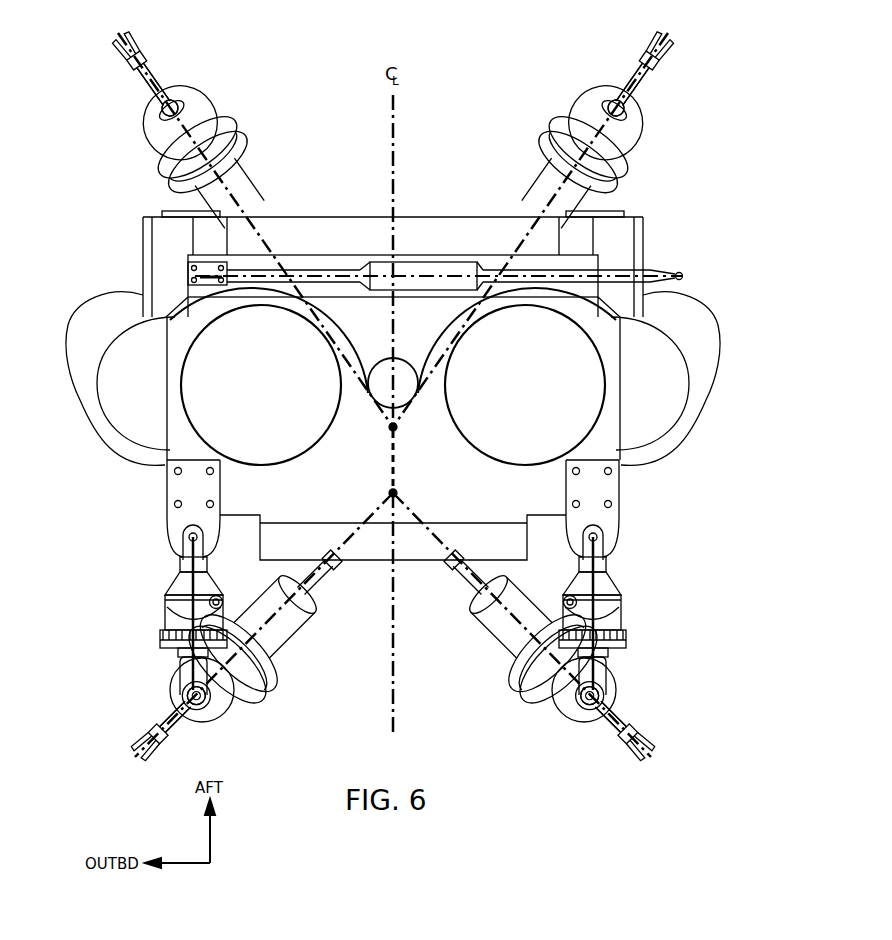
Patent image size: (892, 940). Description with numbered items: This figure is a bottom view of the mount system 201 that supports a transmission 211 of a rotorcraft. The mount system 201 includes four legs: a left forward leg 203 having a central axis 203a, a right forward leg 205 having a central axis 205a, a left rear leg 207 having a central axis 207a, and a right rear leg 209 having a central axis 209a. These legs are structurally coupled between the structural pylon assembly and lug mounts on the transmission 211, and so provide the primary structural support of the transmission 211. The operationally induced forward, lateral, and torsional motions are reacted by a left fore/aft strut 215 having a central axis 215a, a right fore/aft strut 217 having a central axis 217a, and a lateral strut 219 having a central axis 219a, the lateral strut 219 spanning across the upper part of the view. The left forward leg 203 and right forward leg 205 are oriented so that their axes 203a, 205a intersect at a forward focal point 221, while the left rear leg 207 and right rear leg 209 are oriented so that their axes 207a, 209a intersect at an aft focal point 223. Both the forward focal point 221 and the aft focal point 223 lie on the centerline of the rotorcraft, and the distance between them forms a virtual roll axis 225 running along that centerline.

The mount system 201 is at (470, 72).
The left forward leg 203 is at (257, 697).
The central axis of the left forward leg 203a is at (187, 713).
The right forward leg 205 is at (530, 698).
The central axis of the right forward leg 205a is at (603, 713).
The left rear leg 207 is at (143, 130).
The central axis of the left rear leg 207a is at (165, 92).
The right rear leg 209 is at (644, 130).
The central axis of the right rear leg 209a is at (628, 90).
The transmission 211 is at (622, 398).
The left fore/aft strut 215 is at (163, 613).
The central axis of the left fore/aft strut 215a is at (167, 598).
The right fore/aft strut 217 is at (625, 616).
The central axis of the right fore/aft strut 217a is at (621, 631).
The lateral strut 219 is at (312, 266).
The central axis of the lateral strut 219a is at (343, 272).
The forward focal point 221 is at (400, 494).
The aft focal point 223 is at (400, 429).
The virtual roll axis 225 is at (390, 461).